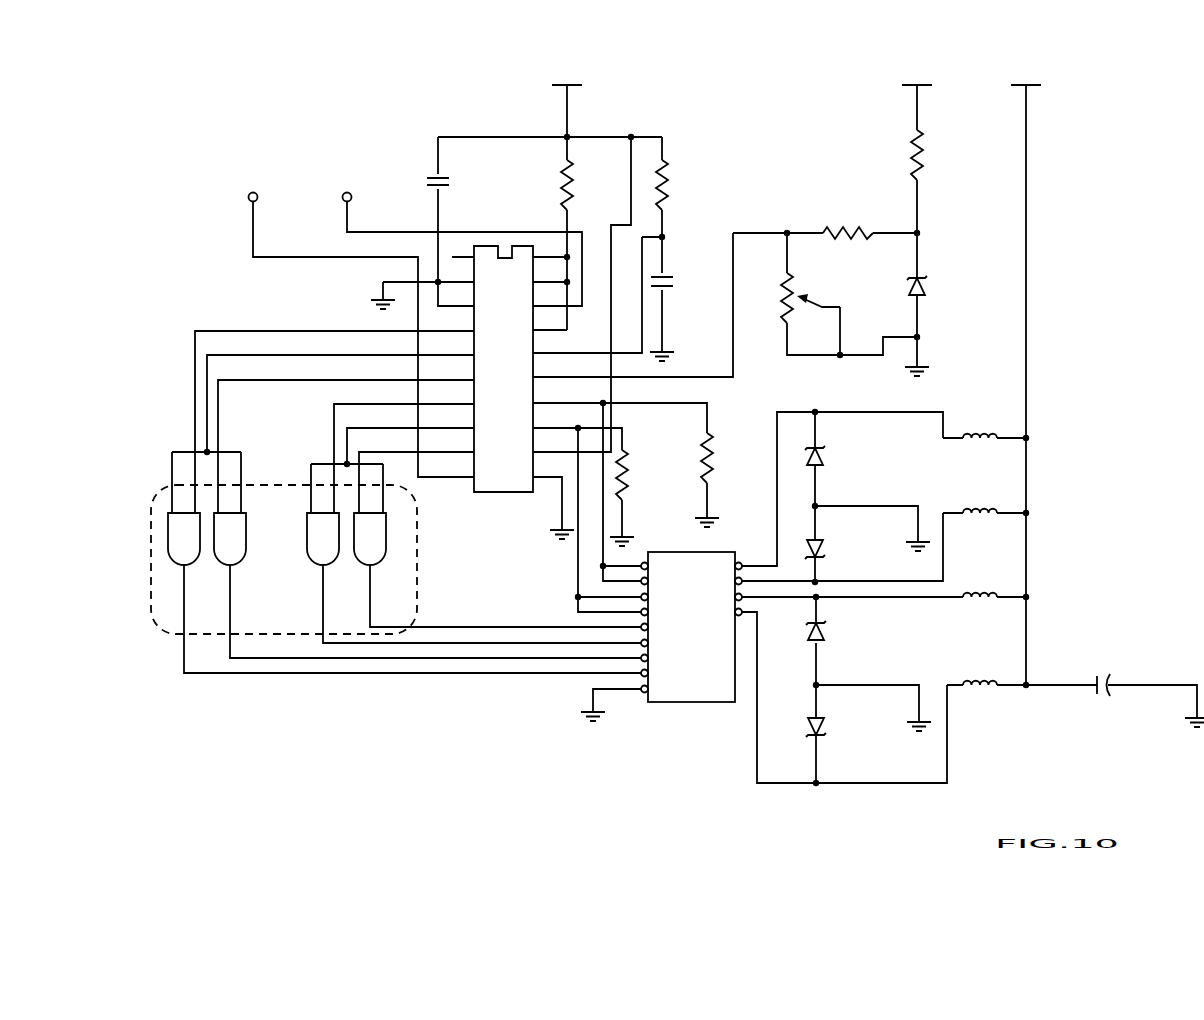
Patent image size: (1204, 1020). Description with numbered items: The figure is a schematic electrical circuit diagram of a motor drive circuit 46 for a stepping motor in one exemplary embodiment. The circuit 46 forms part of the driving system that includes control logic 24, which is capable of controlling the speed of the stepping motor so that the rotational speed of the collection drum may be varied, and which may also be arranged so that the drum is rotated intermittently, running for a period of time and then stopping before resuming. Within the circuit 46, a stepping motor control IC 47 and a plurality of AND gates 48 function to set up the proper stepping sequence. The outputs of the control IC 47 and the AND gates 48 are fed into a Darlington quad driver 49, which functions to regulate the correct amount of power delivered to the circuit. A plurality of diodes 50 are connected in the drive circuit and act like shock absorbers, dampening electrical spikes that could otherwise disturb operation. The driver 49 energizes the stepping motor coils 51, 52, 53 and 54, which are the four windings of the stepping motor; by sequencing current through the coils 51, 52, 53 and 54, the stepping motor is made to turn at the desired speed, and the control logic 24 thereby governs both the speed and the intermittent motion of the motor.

The control logic 24 is at (474, 742).
The motor drive circuit 46 is at (1104, 293).
The stepping motor control IC 47 is at (503, 492).
The AND gates 48 is at (417, 597).
The Darlington quad driver 49 is at (735, 665).
The diodes 50 is at (788, 755).
The stepping motor coil 51 is at (988, 432).
The stepping motor coil 52 is at (988, 507).
The stepping motor coil 53 is at (988, 591).
The stepping motor coil 54 is at (988, 679).